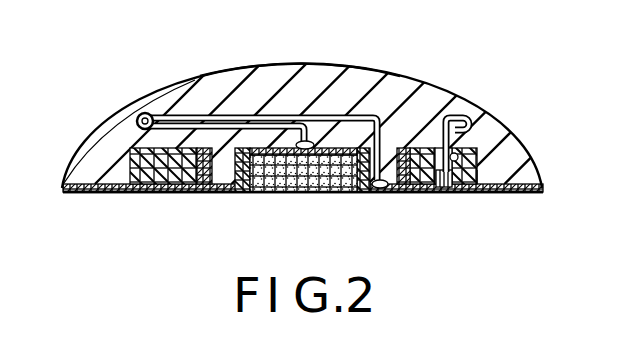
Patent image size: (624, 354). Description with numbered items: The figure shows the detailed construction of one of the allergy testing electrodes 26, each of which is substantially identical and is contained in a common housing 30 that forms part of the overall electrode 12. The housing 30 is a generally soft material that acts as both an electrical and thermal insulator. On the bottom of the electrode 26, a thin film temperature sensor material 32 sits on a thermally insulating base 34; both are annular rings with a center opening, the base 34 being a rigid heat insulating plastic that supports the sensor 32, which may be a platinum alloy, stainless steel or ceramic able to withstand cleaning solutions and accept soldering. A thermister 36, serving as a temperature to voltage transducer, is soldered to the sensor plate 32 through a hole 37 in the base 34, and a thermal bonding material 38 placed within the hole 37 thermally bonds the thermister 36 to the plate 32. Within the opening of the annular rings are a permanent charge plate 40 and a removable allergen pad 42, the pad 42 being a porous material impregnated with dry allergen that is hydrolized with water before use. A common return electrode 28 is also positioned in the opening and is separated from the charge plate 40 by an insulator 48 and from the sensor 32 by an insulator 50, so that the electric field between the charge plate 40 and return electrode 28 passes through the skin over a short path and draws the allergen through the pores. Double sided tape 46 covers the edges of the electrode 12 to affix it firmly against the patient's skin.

The electrode 12 is at (172, 72).
The allergy testing electrode 26 is at (267, 57).
The housing 30 is at (223, 78).
The thermally insulating base 34 is at (140, 170).
The hole 37 is at (477, 158).
The thermal bonding material 38 is at (480, 176).
The double sided tape 46 is at (102, 192).
The thin film temperature sensor material 32 is at (167, 192).
The insulator 50 is at (203, 180).
The common return electrode 28 is at (223, 192).
The insulator 48 is at (240, 177).
The permanent charge plate 40 is at (302, 148).
The removable allergen pad 42 is at (336, 180).
The thermister 36 is at (443, 192).